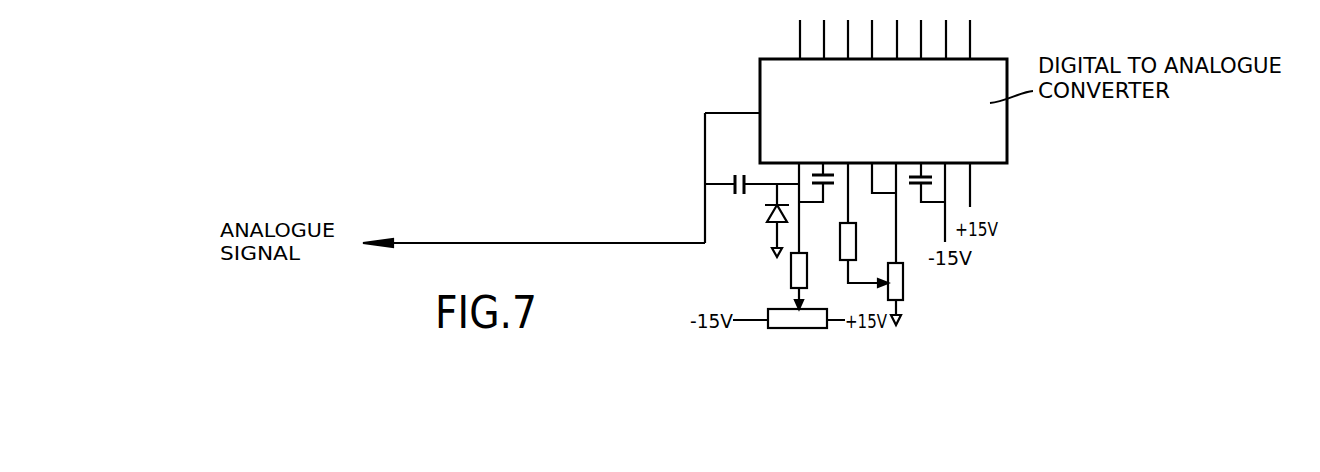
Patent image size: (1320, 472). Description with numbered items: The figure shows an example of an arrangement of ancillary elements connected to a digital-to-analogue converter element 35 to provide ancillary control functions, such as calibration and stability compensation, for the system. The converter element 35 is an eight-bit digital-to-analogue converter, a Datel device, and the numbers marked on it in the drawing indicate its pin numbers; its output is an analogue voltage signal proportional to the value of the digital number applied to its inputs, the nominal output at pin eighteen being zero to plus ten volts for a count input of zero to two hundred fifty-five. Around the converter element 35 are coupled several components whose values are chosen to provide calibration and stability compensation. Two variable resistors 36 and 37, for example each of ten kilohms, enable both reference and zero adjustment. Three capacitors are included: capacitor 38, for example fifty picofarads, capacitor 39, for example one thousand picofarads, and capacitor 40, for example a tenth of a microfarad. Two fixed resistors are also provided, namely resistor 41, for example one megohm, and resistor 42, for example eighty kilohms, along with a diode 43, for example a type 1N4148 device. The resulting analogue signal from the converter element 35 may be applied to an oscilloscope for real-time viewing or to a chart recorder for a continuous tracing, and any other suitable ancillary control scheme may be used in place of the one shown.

The digital-to-analogue converter element 35 is at (995, 122).
The variable resistor 36 is at (805, 320).
The variable resistor 37 is at (903, 283).
The capacitor 38 is at (737, 173).
The capacitor 39 is at (797, 178).
The capacitor 40 is at (933, 179).
The resistor 41 is at (791, 268).
The resistor 42 is at (856, 240).
The diode 43 is at (768, 215).